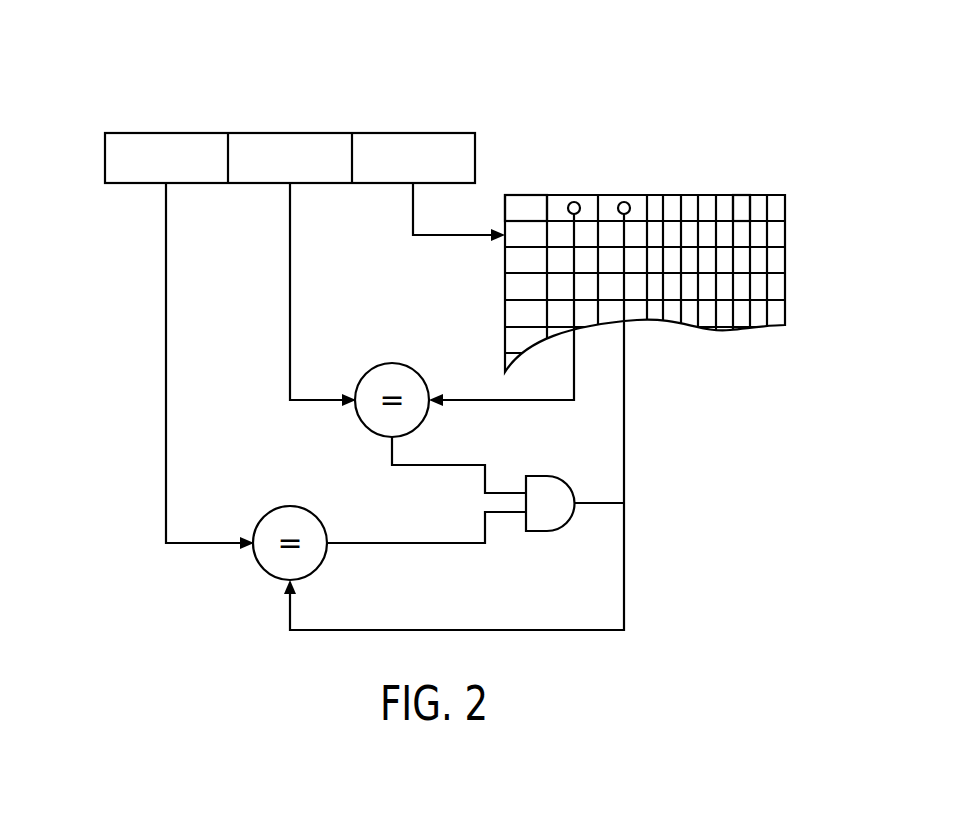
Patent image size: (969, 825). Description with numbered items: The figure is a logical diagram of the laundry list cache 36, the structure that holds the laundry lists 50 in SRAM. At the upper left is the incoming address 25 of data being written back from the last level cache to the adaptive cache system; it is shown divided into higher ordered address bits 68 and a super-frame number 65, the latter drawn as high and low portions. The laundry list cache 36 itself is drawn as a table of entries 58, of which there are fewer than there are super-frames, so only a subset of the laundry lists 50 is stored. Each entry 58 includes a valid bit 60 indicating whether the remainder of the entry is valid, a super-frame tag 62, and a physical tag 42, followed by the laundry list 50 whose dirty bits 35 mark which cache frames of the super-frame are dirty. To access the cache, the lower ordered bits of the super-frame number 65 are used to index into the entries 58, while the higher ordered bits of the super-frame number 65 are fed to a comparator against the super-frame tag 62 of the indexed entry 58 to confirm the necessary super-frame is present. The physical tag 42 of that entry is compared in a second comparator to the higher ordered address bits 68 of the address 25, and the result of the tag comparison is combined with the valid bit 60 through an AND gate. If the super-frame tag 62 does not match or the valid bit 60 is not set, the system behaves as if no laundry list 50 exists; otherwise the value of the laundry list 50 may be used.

The address 25 is at (106, 98).
The higher ordered address bits 68 is at (170, 133).
The super-frame number 65 is at (230, 118).
The laundry list cache 36 is at (716, 158).
The dirty bits 35 is at (656, 358).
The laundry list 50 is at (738, 205).
The valid bit 60 is at (533, 205).
The super-frame tag 62 is at (590, 205).
The physical tag 42 is at (641, 205).
The entries 58 is at (798, 208).